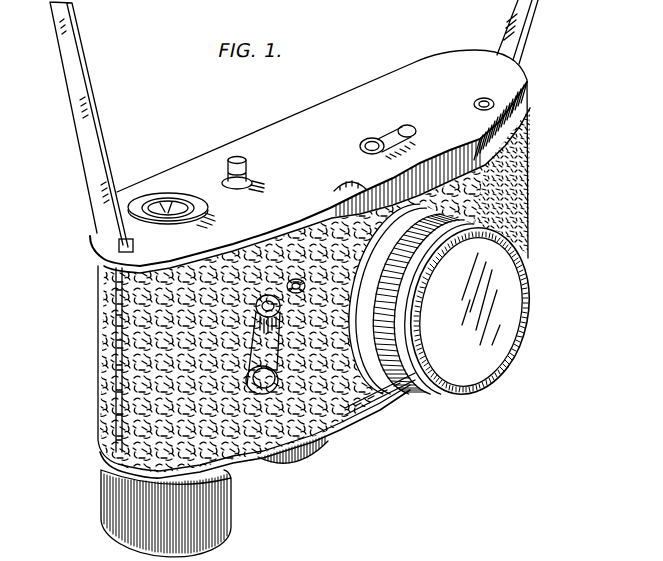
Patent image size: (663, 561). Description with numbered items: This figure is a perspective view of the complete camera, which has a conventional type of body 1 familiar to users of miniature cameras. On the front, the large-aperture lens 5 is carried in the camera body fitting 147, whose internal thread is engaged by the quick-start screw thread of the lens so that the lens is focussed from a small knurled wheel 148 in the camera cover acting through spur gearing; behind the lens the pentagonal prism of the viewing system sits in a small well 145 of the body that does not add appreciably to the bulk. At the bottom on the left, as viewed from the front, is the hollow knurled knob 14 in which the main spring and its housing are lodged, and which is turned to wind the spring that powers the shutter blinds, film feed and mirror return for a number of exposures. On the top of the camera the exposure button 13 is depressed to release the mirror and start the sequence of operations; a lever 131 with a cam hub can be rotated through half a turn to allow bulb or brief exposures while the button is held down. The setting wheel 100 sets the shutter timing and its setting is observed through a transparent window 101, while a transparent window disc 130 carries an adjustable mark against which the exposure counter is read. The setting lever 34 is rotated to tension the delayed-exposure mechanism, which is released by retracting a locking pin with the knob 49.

The body 1 is at (528, 193).
The lens 5 is at (468, 287).
The exposure button 13 is at (238, 153).
The hollow knurled knob 14 is at (163, 513).
The setting lever 34 is at (268, 330).
The knob 49 is at (294, 279).
The setting wheel 100 is at (524, 118).
The transparent window 101 is at (494, 103).
The transparent window disc 130 is at (165, 207).
The lever 131 is at (388, 136).
The well 145 is at (290, 458).
The camera body fitting 147 is at (413, 391).
The small knurled wheel 148 is at (345, 178).